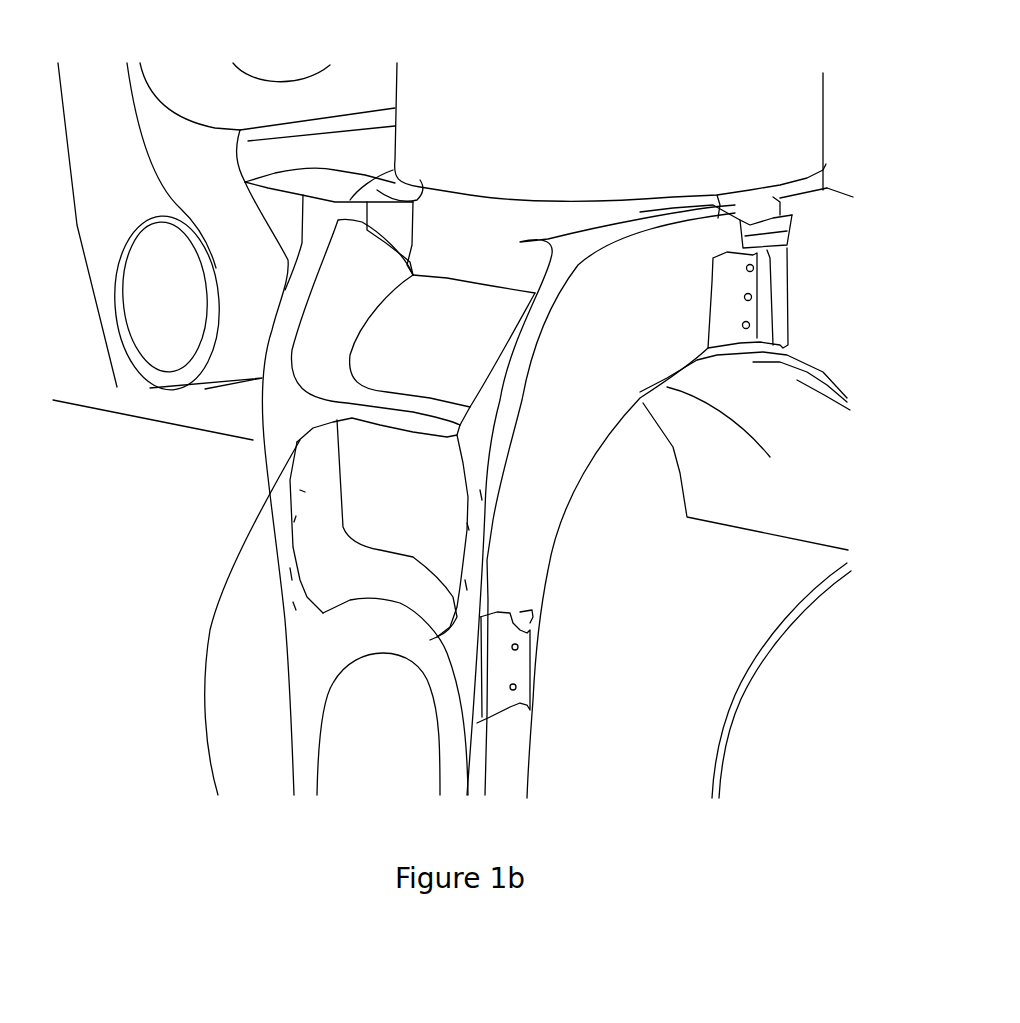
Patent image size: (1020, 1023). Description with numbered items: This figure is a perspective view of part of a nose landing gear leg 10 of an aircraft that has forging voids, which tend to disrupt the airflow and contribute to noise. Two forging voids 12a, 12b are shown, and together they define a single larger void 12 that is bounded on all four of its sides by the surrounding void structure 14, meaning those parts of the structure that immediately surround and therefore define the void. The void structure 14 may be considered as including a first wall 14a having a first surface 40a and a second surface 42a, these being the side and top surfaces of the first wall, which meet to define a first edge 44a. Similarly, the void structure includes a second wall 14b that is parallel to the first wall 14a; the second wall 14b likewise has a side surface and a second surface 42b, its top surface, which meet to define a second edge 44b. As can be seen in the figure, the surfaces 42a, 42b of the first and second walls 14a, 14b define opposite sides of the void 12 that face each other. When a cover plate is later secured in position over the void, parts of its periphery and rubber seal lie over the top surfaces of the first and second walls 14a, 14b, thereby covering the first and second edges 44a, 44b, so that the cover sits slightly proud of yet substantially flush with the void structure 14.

The nose landing gear leg 10 is at (826, 162).
The void 12 is at (352, 415).
The forging void 12a is at (446, 372).
The forging void 12b is at (402, 514).
The void structure 14 is at (280, 318).
The first wall 14a is at (290, 568).
The second wall 14b is at (480, 490).
The first surface 40a is at (300, 490).
The second surface 42a is at (293, 602).
The second surface 42b is at (465, 580).
The first edge 44a is at (296, 516).
The second edge 44b is at (467, 523).